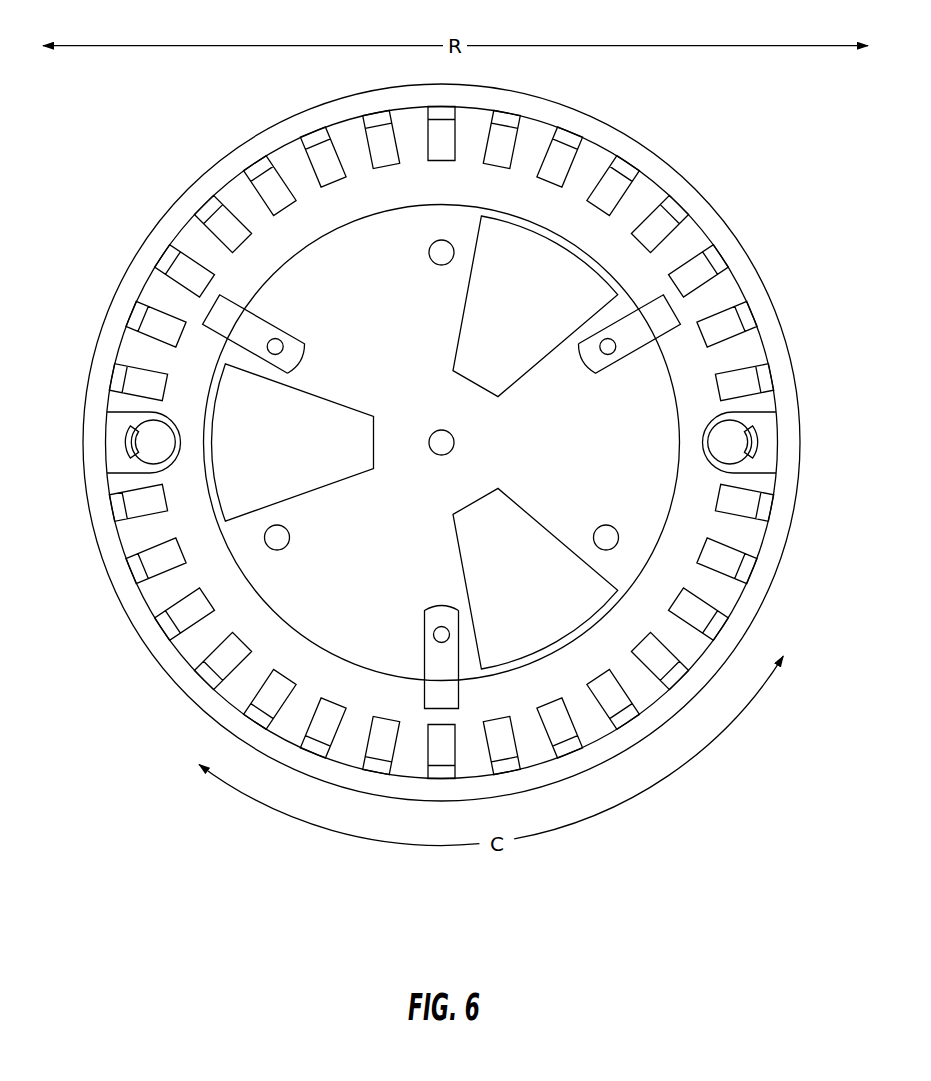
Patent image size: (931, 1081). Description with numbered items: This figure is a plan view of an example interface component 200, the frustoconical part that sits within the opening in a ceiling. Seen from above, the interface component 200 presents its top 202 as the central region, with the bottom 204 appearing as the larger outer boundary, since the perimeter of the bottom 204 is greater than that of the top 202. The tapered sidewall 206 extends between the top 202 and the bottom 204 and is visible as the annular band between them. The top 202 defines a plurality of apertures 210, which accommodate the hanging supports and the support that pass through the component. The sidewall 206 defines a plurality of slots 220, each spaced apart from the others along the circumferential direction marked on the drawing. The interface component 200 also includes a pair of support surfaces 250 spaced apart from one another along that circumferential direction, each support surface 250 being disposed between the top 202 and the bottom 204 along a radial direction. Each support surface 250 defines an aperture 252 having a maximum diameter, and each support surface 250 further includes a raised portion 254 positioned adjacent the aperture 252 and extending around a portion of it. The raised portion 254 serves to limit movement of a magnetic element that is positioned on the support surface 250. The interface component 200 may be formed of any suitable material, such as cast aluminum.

The interface component 200 is at (445, 442).
The top 202 is at (419, 389).
The bottom 204 is at (763, 298).
The sidewall 206 is at (302, 248).
The apertures 210 is at (439, 254).
The slots 220 is at (186, 614).
The support surfaces 250 is at (116, 417).
The aperture 252 is at (158, 441).
The raised portion 254 is at (127, 449).